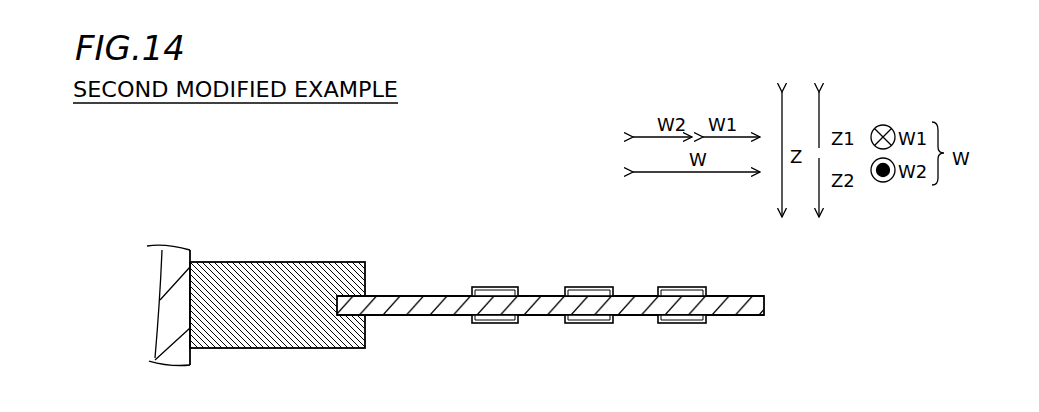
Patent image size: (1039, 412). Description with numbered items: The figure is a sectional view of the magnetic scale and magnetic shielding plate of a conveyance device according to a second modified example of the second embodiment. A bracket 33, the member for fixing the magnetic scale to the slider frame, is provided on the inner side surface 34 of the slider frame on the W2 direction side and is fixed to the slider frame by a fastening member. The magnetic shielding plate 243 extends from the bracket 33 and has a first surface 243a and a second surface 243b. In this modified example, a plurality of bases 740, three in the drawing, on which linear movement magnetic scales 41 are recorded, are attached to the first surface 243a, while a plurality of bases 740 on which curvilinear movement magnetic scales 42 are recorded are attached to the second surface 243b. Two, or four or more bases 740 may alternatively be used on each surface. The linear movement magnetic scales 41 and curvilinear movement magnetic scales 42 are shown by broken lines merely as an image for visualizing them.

The bracket 33 is at (253, 262).
The inner side surface 34 is at (192, 253).
The magnetic shielding plate 243 is at (392, 318).
The first surface of the magnetic shielding plate 243a is at (440, 296).
The second surface of the magnetic shielding plate 243b is at (440, 316).
The linear movement magnetic scale 41 is at (487, 287).
The curvilinear movement magnetic scale 42 is at (482, 323).
The base 740 is at (514, 286).